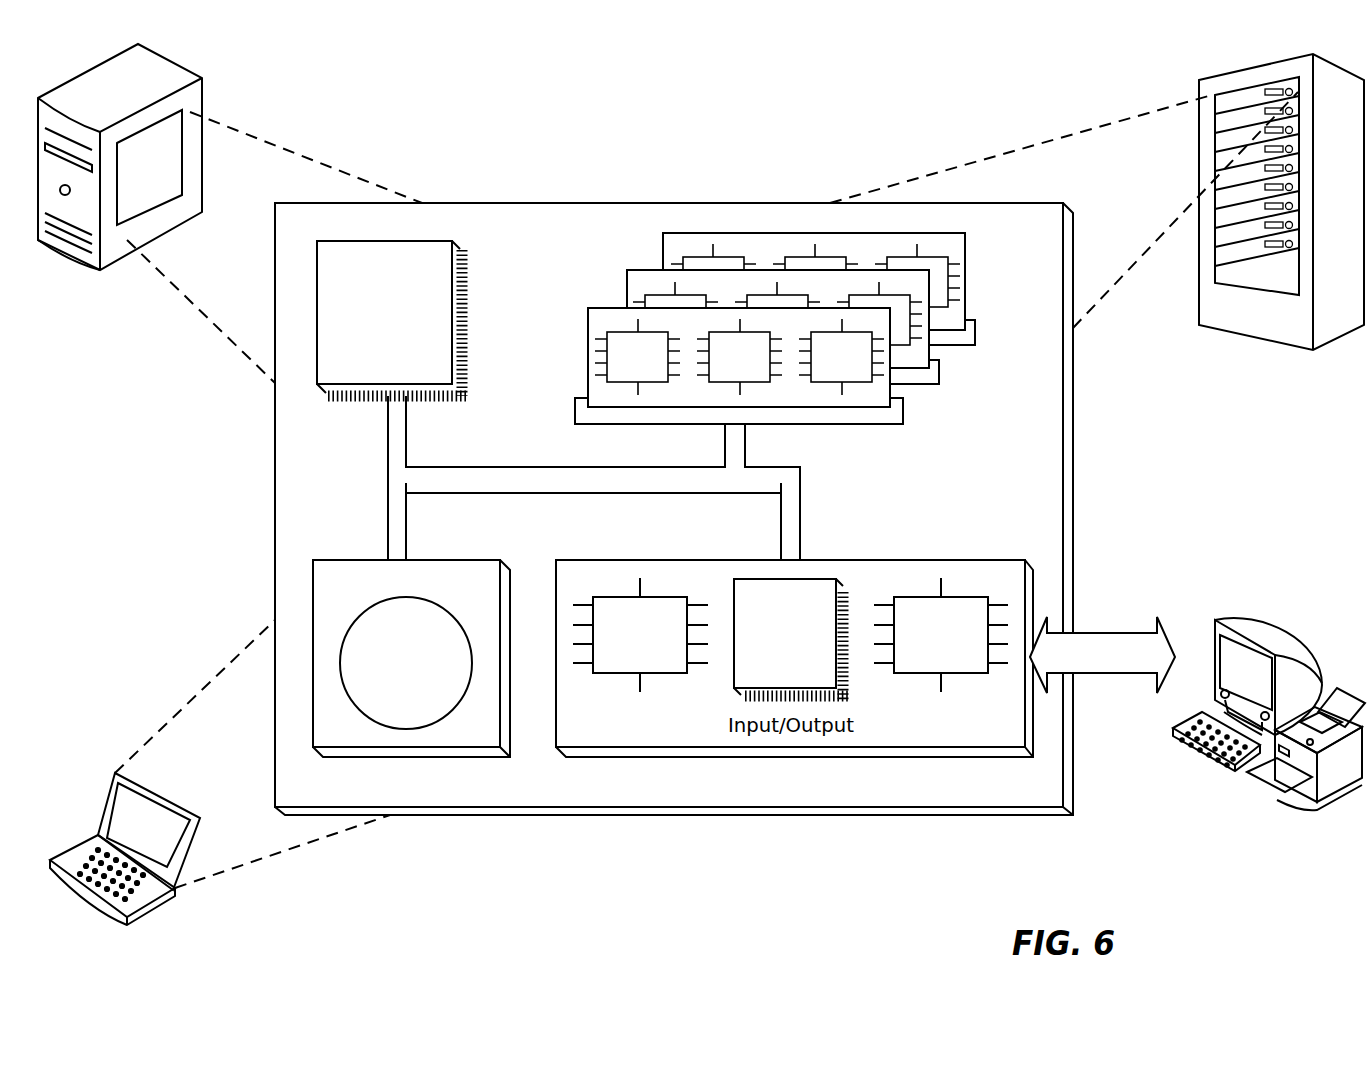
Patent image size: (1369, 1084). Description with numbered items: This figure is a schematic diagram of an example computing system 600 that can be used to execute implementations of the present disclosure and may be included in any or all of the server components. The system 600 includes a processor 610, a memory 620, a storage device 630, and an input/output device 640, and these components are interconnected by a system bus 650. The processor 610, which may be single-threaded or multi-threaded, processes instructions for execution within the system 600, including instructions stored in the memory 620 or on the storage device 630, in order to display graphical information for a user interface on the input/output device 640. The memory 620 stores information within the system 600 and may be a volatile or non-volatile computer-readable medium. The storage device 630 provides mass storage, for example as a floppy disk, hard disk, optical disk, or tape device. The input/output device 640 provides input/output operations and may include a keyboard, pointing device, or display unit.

The computing system 600 is at (487, 120).
The processor 610 is at (446, 379).
The memory 620 is at (972, 387).
The storage device 630 is at (490, 741).
The input/output device 640 is at (1214, 625).
The system bus 650 is at (590, 485).